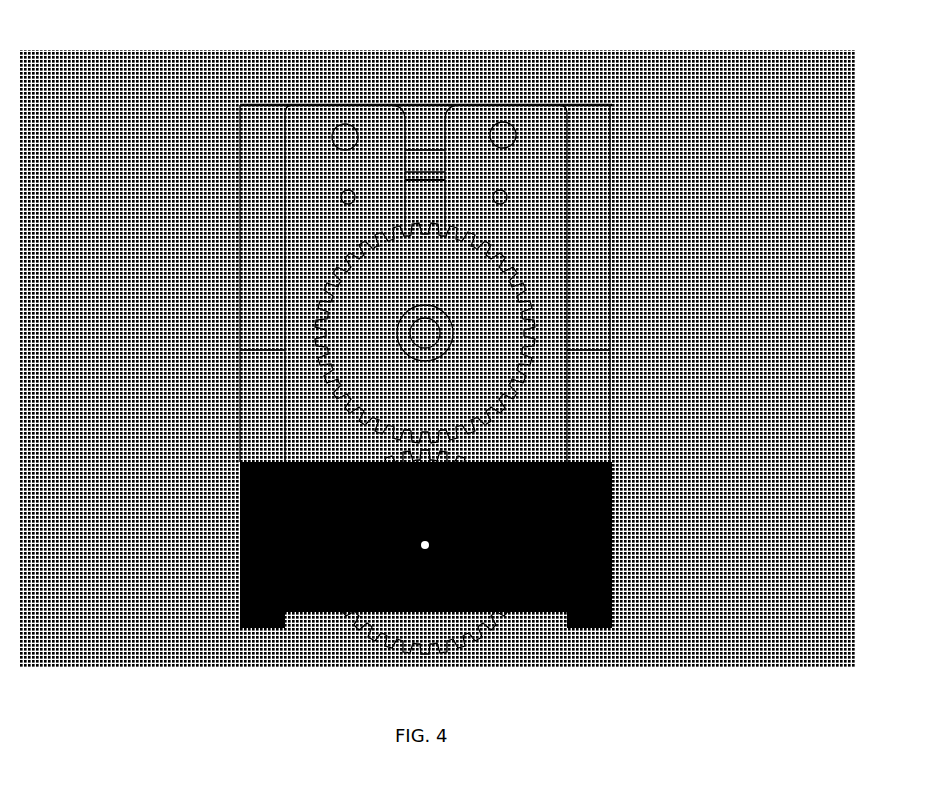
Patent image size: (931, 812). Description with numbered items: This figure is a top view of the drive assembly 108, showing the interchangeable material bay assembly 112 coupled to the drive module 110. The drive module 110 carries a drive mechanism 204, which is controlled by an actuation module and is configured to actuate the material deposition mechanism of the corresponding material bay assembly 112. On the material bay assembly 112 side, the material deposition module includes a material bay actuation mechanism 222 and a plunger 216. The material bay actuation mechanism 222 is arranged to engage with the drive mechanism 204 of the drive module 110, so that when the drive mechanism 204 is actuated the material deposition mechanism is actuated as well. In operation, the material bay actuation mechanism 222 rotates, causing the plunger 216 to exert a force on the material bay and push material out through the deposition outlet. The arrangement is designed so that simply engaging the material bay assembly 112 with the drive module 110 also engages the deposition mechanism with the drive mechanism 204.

The drive assembly 108 is at (362, 56).
The drive module 110 is at (596, 272).
The material bay assembly 112 is at (612, 543).
The drive mechanism 204 is at (483, 245).
The plunger 216 is at (240, 544).
The material bay actuation mechanism 222 is at (395, 642).